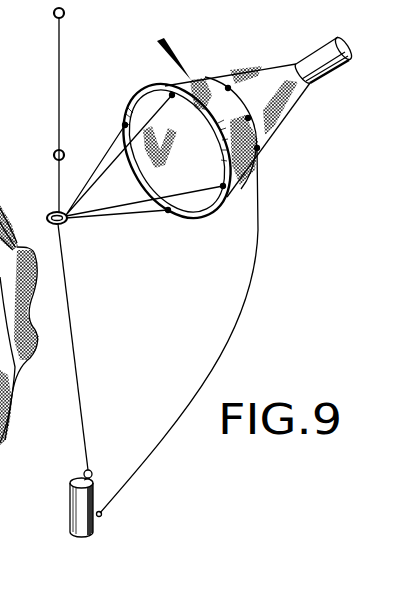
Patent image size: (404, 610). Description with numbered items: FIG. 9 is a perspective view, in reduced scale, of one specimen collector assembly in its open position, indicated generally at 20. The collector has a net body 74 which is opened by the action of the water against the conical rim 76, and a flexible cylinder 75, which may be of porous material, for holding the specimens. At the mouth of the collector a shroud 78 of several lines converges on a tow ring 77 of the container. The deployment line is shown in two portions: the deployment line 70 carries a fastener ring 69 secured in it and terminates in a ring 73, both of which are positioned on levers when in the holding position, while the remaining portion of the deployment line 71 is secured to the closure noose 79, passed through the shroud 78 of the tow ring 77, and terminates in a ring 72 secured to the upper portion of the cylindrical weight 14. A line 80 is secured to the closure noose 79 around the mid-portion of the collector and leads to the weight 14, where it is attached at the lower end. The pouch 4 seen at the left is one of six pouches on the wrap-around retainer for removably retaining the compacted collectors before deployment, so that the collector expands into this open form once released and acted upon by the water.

The pouch 4 is at (13, 498).
The cylindrical weight 14 is at (72, 532).
The drogue assembly 20 is at (170, 43).
The fastener ring 69 is at (55, 152).
The deployment line 70 is at (58, 68).
The deployment line remaining portion 71 is at (58, 174).
The ring 72 is at (95, 470).
The ring 73 is at (54, 16).
The net body 74 is at (272, 126).
The flexible cylinder 75 is at (328, 88).
The conical rim 76 is at (187, 218).
The tow ring 77 is at (55, 224).
The shroud 78 is at (98, 162).
The closure noose 79 is at (242, 100).
The line 80 is at (253, 292).